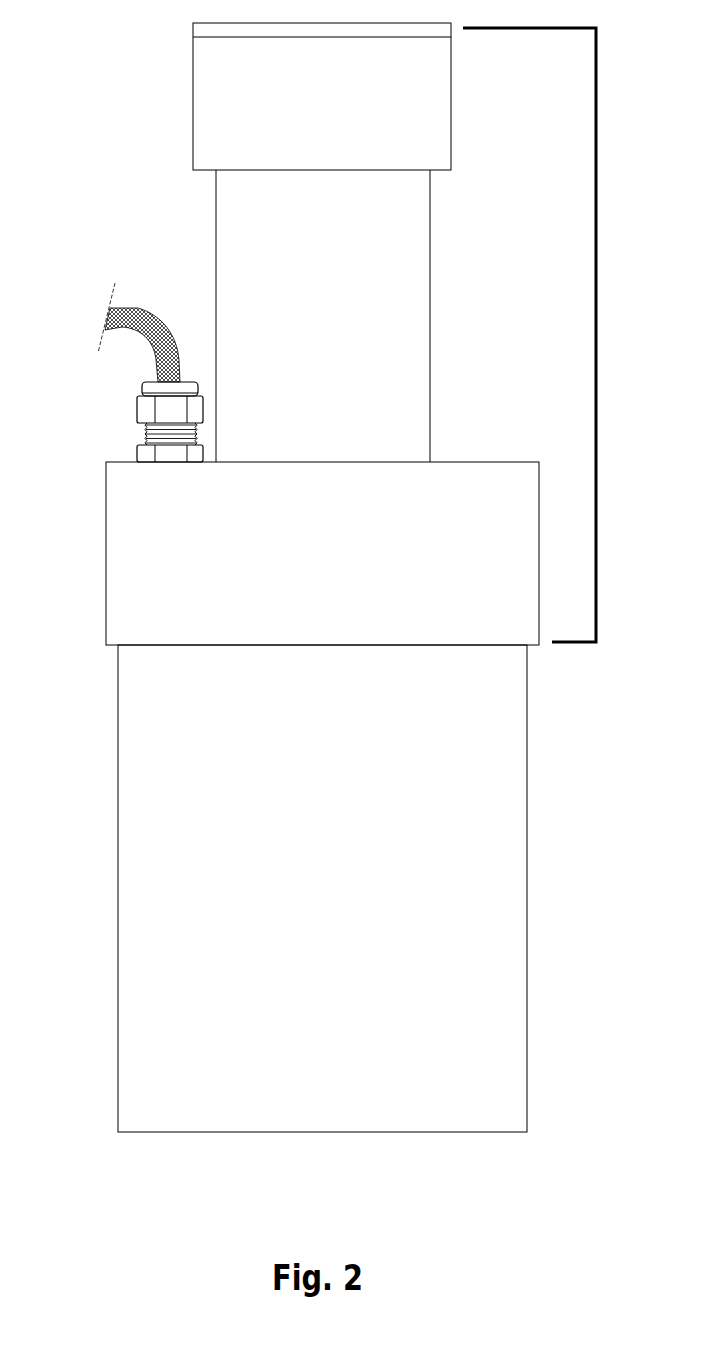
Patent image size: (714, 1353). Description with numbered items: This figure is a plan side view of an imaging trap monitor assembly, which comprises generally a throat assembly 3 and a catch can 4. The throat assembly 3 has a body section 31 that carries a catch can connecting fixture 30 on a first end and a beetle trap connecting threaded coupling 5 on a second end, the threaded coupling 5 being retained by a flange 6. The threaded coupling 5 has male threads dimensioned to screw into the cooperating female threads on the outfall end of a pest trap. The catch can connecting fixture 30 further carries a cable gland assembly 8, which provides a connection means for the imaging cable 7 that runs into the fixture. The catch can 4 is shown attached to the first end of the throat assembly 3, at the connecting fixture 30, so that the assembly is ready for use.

The throat assembly 3 is at (600, 337).
The catch can 4 is at (527, 885).
The beetle trap connecting threaded coupling 5 is at (195, 77).
The flange 6 is at (195, 31).
The imaging cable 7 is at (133, 308).
The cable gland assembly 8 is at (137, 412).
The catch can connecting fixture 30 is at (125, 544).
The body section 31 is at (262, 237).